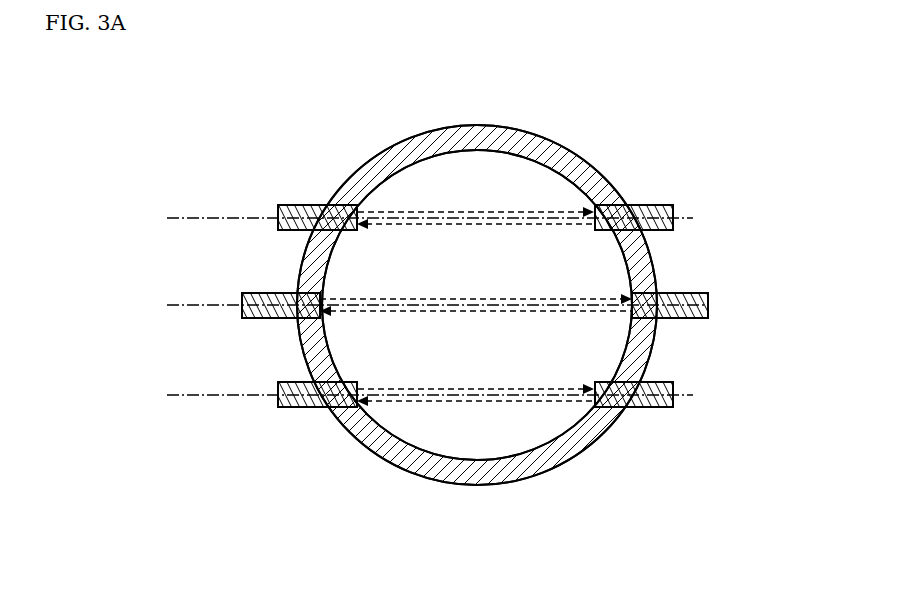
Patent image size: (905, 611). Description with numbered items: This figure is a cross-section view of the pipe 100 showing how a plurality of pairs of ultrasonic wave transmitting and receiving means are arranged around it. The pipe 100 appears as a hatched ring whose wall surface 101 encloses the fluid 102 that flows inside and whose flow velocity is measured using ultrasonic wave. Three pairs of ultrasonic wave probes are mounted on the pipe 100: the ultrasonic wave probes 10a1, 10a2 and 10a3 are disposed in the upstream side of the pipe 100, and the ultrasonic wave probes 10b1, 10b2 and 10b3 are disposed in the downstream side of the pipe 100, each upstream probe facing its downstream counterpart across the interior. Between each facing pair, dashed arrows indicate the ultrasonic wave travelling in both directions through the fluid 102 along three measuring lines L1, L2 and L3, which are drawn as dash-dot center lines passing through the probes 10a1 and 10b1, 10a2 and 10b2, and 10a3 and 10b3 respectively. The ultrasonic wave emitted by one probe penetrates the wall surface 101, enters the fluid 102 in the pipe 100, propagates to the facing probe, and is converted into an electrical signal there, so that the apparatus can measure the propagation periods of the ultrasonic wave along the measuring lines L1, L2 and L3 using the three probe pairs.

The pipe 100 is at (523, 143).
The wall surface 101 is at (398, 142).
The fluid 102 is at (529, 180).
The ultrasonic wave probe 10a1 is at (297, 205).
The ultrasonic wave probe 10a2 is at (258, 293).
The ultrasonic wave probe 10a3 is at (295, 382).
The ultrasonic wave probe 10b1 is at (662, 205).
The ultrasonic wave probe 10b2 is at (700, 293).
The ultrasonic wave probe 10b3 is at (662, 382).
The measuring line L1 is at (185, 218).
The measuring line L2 is at (185, 305).
The measuring line L3 is at (185, 395).